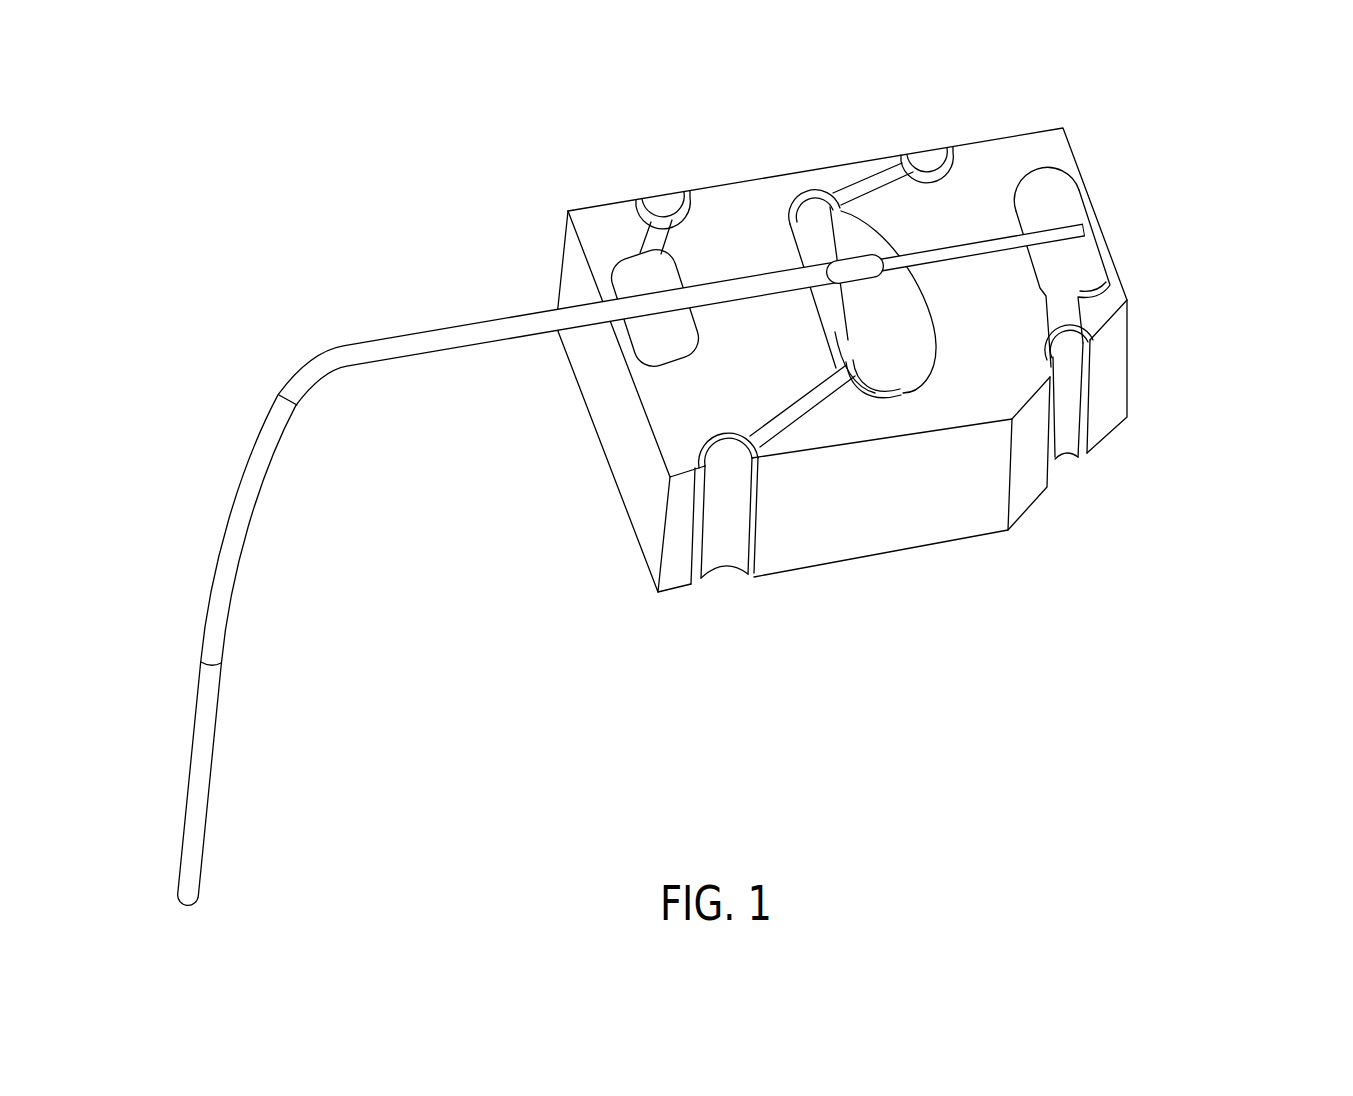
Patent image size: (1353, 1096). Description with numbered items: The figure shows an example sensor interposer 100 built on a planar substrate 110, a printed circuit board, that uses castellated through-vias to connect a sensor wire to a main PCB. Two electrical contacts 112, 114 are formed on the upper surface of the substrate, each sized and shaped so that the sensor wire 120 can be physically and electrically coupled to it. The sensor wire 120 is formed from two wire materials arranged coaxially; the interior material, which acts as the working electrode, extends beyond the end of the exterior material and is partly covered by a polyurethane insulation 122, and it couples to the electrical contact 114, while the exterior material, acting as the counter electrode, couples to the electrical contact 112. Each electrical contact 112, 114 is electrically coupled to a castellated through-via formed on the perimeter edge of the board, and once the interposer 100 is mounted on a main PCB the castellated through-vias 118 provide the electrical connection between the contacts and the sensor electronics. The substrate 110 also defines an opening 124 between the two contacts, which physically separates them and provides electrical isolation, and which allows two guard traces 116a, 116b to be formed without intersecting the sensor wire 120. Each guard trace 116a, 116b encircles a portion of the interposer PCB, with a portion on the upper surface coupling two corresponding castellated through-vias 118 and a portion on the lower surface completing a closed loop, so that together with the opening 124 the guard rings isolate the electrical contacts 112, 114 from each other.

The sensor interposer 100 is at (385, 131).
The planar substrate 110 is at (995, 150).
The electrical contact 112 is at (622, 231).
The electrical contact 114 is at (1066, 203).
The guard trace 116a is at (832, 181).
The guard trace 116b is at (692, 448).
The castellated through-vias 118 is at (718, 587).
The sensor wire 120 is at (465, 325).
The polyurethane insulation 122 is at (842, 282).
The opening 124 is at (921, 352).